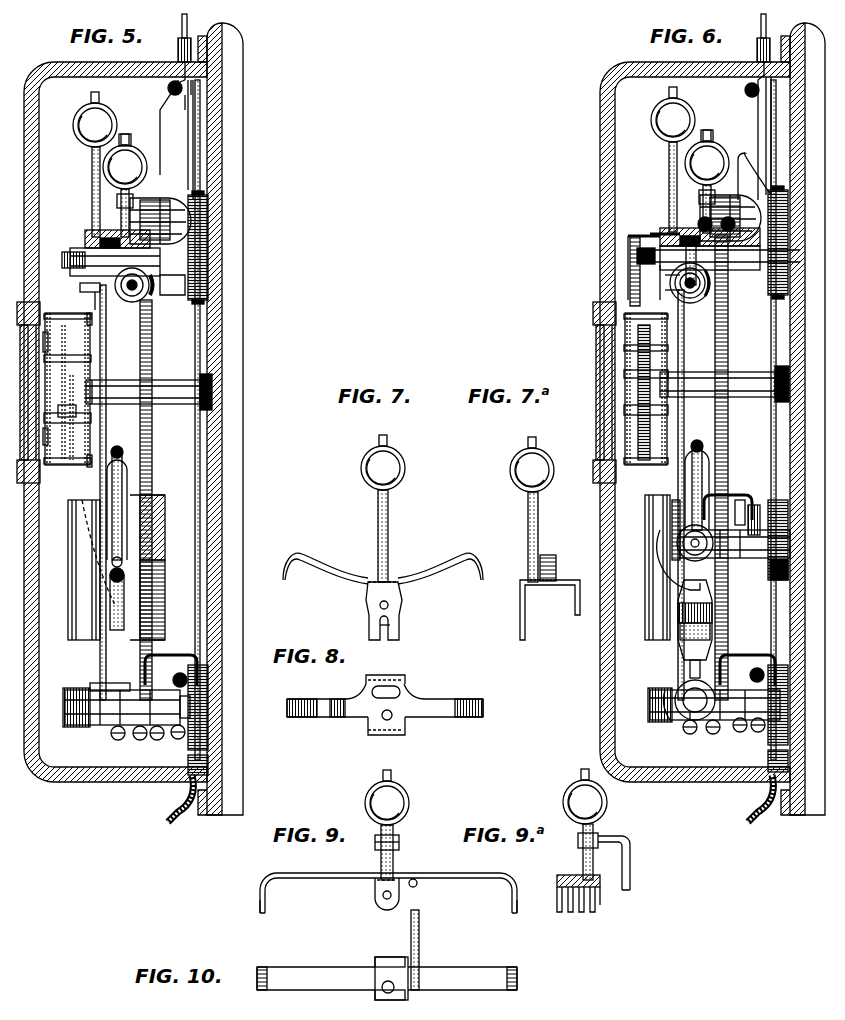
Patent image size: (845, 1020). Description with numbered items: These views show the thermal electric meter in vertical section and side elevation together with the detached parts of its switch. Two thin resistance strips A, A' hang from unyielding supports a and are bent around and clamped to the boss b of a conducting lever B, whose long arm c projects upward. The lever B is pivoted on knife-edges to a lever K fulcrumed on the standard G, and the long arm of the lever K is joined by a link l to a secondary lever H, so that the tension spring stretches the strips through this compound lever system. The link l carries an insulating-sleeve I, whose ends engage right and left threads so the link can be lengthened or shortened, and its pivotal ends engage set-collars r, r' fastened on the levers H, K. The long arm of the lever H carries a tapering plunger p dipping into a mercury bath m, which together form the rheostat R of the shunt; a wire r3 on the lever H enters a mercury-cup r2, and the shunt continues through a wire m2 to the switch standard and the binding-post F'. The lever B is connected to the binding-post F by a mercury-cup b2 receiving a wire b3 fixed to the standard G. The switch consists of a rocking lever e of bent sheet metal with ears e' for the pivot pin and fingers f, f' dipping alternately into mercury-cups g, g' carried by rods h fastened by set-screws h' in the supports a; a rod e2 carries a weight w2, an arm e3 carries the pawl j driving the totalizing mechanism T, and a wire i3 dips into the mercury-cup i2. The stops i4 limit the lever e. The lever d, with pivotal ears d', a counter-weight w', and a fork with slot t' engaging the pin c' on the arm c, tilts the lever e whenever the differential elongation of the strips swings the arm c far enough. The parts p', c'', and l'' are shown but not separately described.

In FIG. 5, the totalizing mechanism T is at (47, 373).
In FIG. 6, the totalizing mechanism T is at (640, 385).
In FIG. 5, the binding-post F' is at (176, 107).
In FIG. 6, the binding-post F' is at (754, 107).
In FIG. 5, the counter-weight w' is at (95, 164).
In FIG. 6, the counter-weight w' is at (673, 159).
In FIG. 7, the counter-weight w' is at (383, 508).
In FIG. 7A, the counter-weight w' is at (532, 509).
In FIG. 5, the weight w2 is at (125, 185).
In FIG. 6, the weight w2 is at (707, 181).
In FIG. 9, the weight w2 is at (387, 825).
In FIG. 9A, the weight w2 is at (585, 824).
In FIG. 5, the arm e3 is at (131, 146).
In FIG. 6, the arm e3 is at (631, 236).
In FIG. 9, the arm e3 is at (417, 885).
In FIG. 10, the arm e3 is at (424, 950).
In FIG. 5, the wire or rod i3 is at (158, 199).
In FIG. 6, the wire or rod i3 is at (735, 198).
In FIG. 9A, the wire or rod i3 is at (624, 863).
In FIG. 5, the lever d is at (111, 242).
In FIG. 6, the lever d is at (718, 217).
In FIG. 7, the lever d is at (383, 568).
In FIG. 7A, the lever d is at (555, 562).
In FIG. 8, the lever d is at (385, 700).
In FIG. 7, the pivotal ears d' is at (393, 611).
In FIG. 7A, the pivotal ears d' is at (550, 610).
In FIG. 8, the pivotal ears d' is at (398, 702).
In FIG. 7, the slot t' is at (397, 627).
In FIG. 5, the wire m2 is at (192, 420).
In FIG. 6, the wire m2 is at (769, 420).
In FIG. 5, the mercury-cup g is at (132, 298).
In FIG. 6, the mercury-cup g' is at (690, 292).
In FIG. 5, the pin c' is at (77, 287).
In FIG. 5, the pin p' is at (80, 301).
In FIG. 5, the mercury-cup i2 is at (171, 288).
In FIG. 5, the long arm of lever B c is at (110, 492).
In FIG. 6, the long arm of lever B c is at (688, 495).
In FIG. 6, the pin c'' is at (663, 284).
In FIG. 5, the metal strip A is at (157, 500).
In FIG. 6, the metal strip A' is at (734, 467).
In FIG. 5, the rheostat R is at (91, 562).
In FIG. 6, the rheostat R is at (657, 559).
In FIG. 5, the plunger p is at (141, 506).
In FIG. 6, the plunger p is at (728, 486).
In FIG. 5, the secondary lever H is at (166, 511).
In FIG. 6, the secondary lever H is at (697, 478).
In FIG. 5, the mercury bath m is at (117, 599).
In FIG. 5, the wire or rod b3 is at (171, 663).
In FIG. 6, the wire or rod b3 is at (740, 660).
In FIG. 5, the mercury-cup b2 is at (173, 677).
In FIG. 6, the mercury-cup b2 is at (752, 670).
In FIG. 5, the boss b is at (158, 738).
In FIG. 6, the boss b is at (724, 734).
In FIG. 5, the lever B is at (126, 716).
In FIG. 6, the lever B is at (714, 697).
In FIG. 5, the lever K is at (95, 690).
In FIG. 6, the lever K is at (695, 700).
In FIG. 5, the binding-post F is at (171, 788).
In FIG. 6, the binding-post F is at (759, 782).
In FIG. 6, the arm or rod e2 is at (713, 140).
In FIG. 9, the arm or rod e2 is at (393, 850).
In FIG. 9A, the arm or rod e2 is at (595, 848).
In FIG. 10, the arm or rod e2 is at (391, 978).
In FIG. 9, the rocking lever e is at (388, 886).
In FIG. 10, the rocking lever e is at (387, 978).
In FIG. 9, the ears e' is at (387, 894).
In FIG. 9A, the ears e' is at (576, 894).
In FIG. 10, the ears e' is at (390, 975).
In FIG. 9, the finger f is at (252, 905).
In FIG. 9, the finger f' is at (523, 901).
In FIG. 9A, the finger f' is at (530, 888).
In FIG. 6, the supporting-rod h is at (697, 252).
In FIG. 6, the set-screw h' is at (660, 223).
In FIG. 6, the support a is at (690, 235).
In FIG. 6, the pawl j is at (628, 271).
In FIG. 6, the stops i4 is at (654, 282).
In FIG. 6, the pin l'' is at (663, 297).
In FIG. 6, the link l is at (709, 622).
In FIG. 6, the set-collar r is at (668, 530).
In FIG. 6, the set-collar r' is at (675, 725).
In FIG. 6, the mercury-cup r2 is at (757, 509).
In FIG. 6, the wire r3 is at (742, 498).
In FIG. 6, the standard G is at (776, 578).
In FIG. 6, the insulating-sleeve I is at (683, 640).